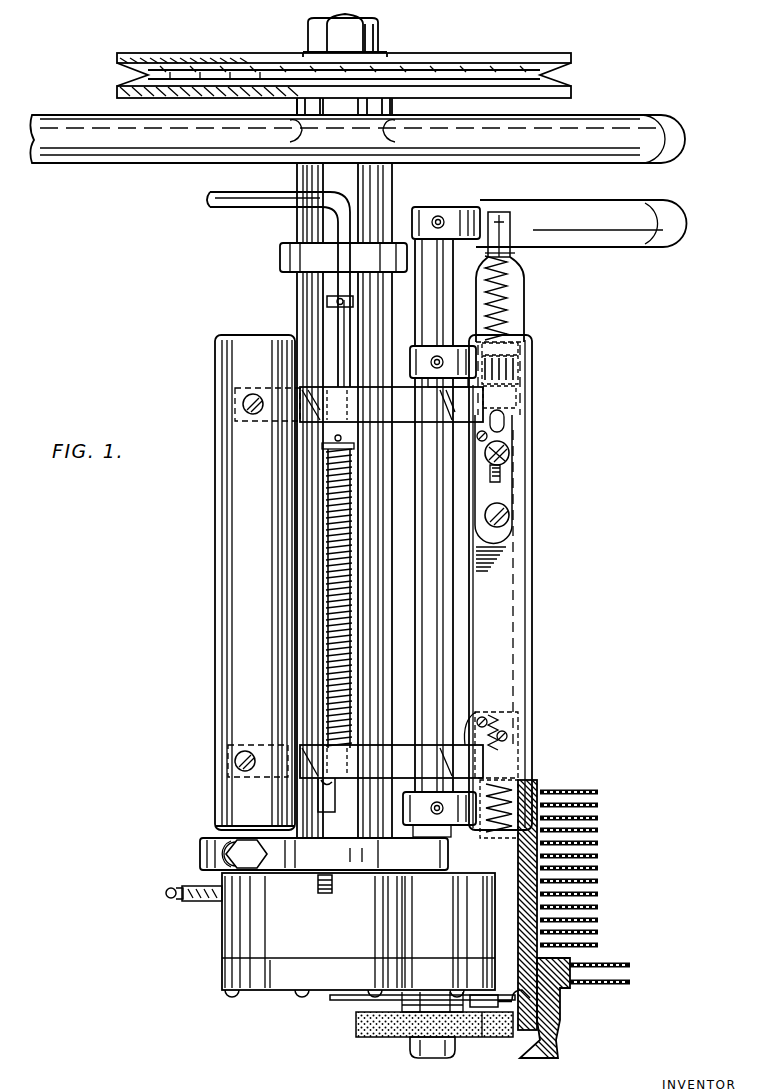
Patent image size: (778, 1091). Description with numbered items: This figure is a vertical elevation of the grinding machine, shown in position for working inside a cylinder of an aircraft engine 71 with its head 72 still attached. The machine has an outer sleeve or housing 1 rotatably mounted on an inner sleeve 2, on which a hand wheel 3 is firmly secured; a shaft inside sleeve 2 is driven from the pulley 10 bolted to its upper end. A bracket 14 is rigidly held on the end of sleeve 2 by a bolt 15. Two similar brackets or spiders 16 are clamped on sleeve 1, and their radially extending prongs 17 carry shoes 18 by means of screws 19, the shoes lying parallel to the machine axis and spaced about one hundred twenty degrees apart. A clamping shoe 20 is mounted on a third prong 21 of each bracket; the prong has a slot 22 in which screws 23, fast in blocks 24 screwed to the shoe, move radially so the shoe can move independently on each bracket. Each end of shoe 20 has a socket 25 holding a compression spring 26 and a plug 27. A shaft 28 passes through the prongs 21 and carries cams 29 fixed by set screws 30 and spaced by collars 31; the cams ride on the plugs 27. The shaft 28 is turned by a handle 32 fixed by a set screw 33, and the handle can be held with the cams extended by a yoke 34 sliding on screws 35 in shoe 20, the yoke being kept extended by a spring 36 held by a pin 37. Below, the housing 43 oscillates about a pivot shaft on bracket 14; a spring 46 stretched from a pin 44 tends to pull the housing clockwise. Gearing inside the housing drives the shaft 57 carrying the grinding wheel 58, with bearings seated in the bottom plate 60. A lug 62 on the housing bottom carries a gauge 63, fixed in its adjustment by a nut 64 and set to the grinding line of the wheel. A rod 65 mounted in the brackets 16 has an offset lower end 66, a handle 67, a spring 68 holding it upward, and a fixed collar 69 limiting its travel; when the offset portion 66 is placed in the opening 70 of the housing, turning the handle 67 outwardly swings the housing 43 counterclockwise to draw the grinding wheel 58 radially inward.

The outer sleeve or housing 1 is at (290, 287).
The inner sleeve 2 is at (398, 190).
The hand wheel 3 is at (690, 135).
The pulley 10 is at (555, 93).
The bracket 14 is at (200, 853).
The bolt 15 is at (240, 830).
The brackets or spiders 16 is at (410, 412).
The prongs 17 is at (235, 422).
The shoes 18 is at (238, 590).
The screws 19 is at (243, 405).
The clamping shoe 20 is at (500, 598).
The third prong 21 is at (522, 410).
The slot 22 is at (520, 392).
The screws 23 is at (505, 437).
The blocks 24 is at (512, 490).
The socket 25 is at (508, 333).
The compression spring 26 is at (512, 362).
The plug 27 is at (530, 377).
The shaft 28 is at (430, 308).
The cams 29 is at (415, 356).
The set screws 30 is at (437, 372).
The collars 31 is at (432, 388).
The handle 32 is at (686, 240).
The set screw 33 is at (442, 216).
The yoke 34 is at (524, 300).
The screws 35 is at (505, 471).
The spring 36 is at (510, 318).
The pin 37 is at (524, 282).
The housing 43 is at (222, 930).
The pin 44 is at (168, 890).
The spring 46 is at (200, 886).
The shaft 57 is at (400, 1000).
The grinding wheel 58 is at (380, 1040).
The bottom plate 60 is at (282, 985).
The lug 62 is at (476, 1040).
The gauge 63 is at (540, 994).
The nut 64 is at (508, 1040).
The rod 65 is at (336, 322).
The offset lower end 66 is at (318, 800).
The handle 67 is at (215, 207).
The spring 68 is at (345, 655).
The fixed collar 69 is at (326, 300).
The slot or opening 70 is at (318, 890).
The cylinder of an aircraft engine 71 is at (537, 788).
The head 72 is at (556, 1026).